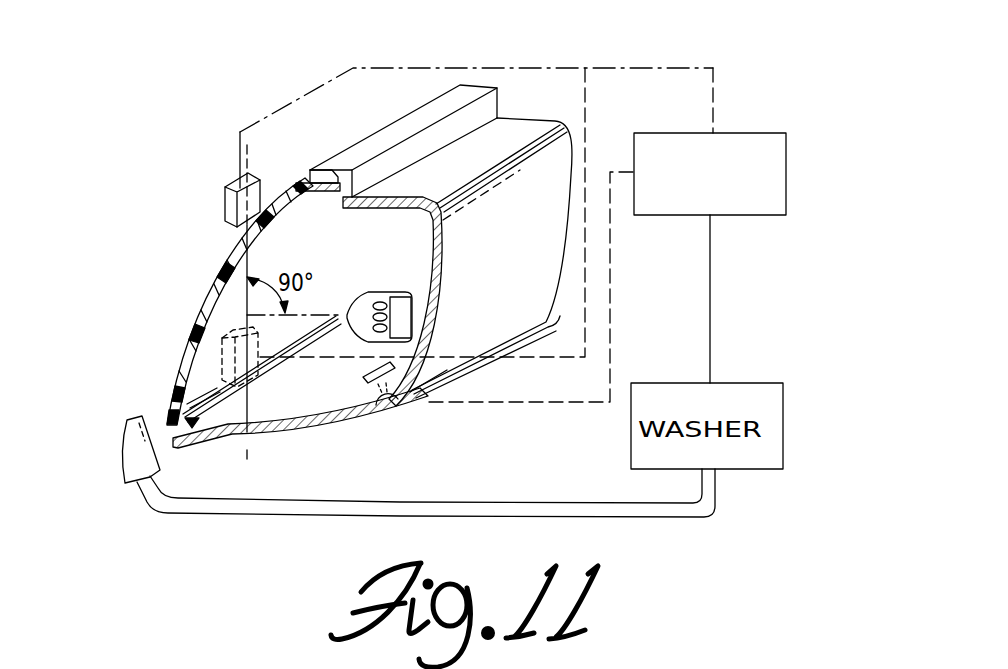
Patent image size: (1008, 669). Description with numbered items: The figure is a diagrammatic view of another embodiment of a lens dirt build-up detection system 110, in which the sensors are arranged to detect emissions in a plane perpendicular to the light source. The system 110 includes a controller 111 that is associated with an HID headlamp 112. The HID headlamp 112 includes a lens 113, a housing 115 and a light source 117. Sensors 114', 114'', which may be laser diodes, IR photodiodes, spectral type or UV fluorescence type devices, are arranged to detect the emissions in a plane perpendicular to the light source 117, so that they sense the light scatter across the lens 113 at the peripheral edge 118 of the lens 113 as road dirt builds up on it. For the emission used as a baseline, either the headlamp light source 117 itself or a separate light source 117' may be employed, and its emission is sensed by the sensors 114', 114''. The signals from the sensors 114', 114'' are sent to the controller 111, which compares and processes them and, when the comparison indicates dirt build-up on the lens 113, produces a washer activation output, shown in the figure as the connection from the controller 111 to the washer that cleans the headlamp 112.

The lens dirt build-up detection system 110 is at (545, 70).
The controller 111 is at (770, 177).
The HID headlamp 112 is at (446, 368).
The lens 113 is at (210, 292).
The sensor 114' is at (171, 190).
The sensor 114'' is at (162, 357).
The housing 115 is at (388, 197).
The light source 117 is at (379, 278).
The separate light source 117' is at (404, 429).
The peripheral edge 118 is at (318, 192).